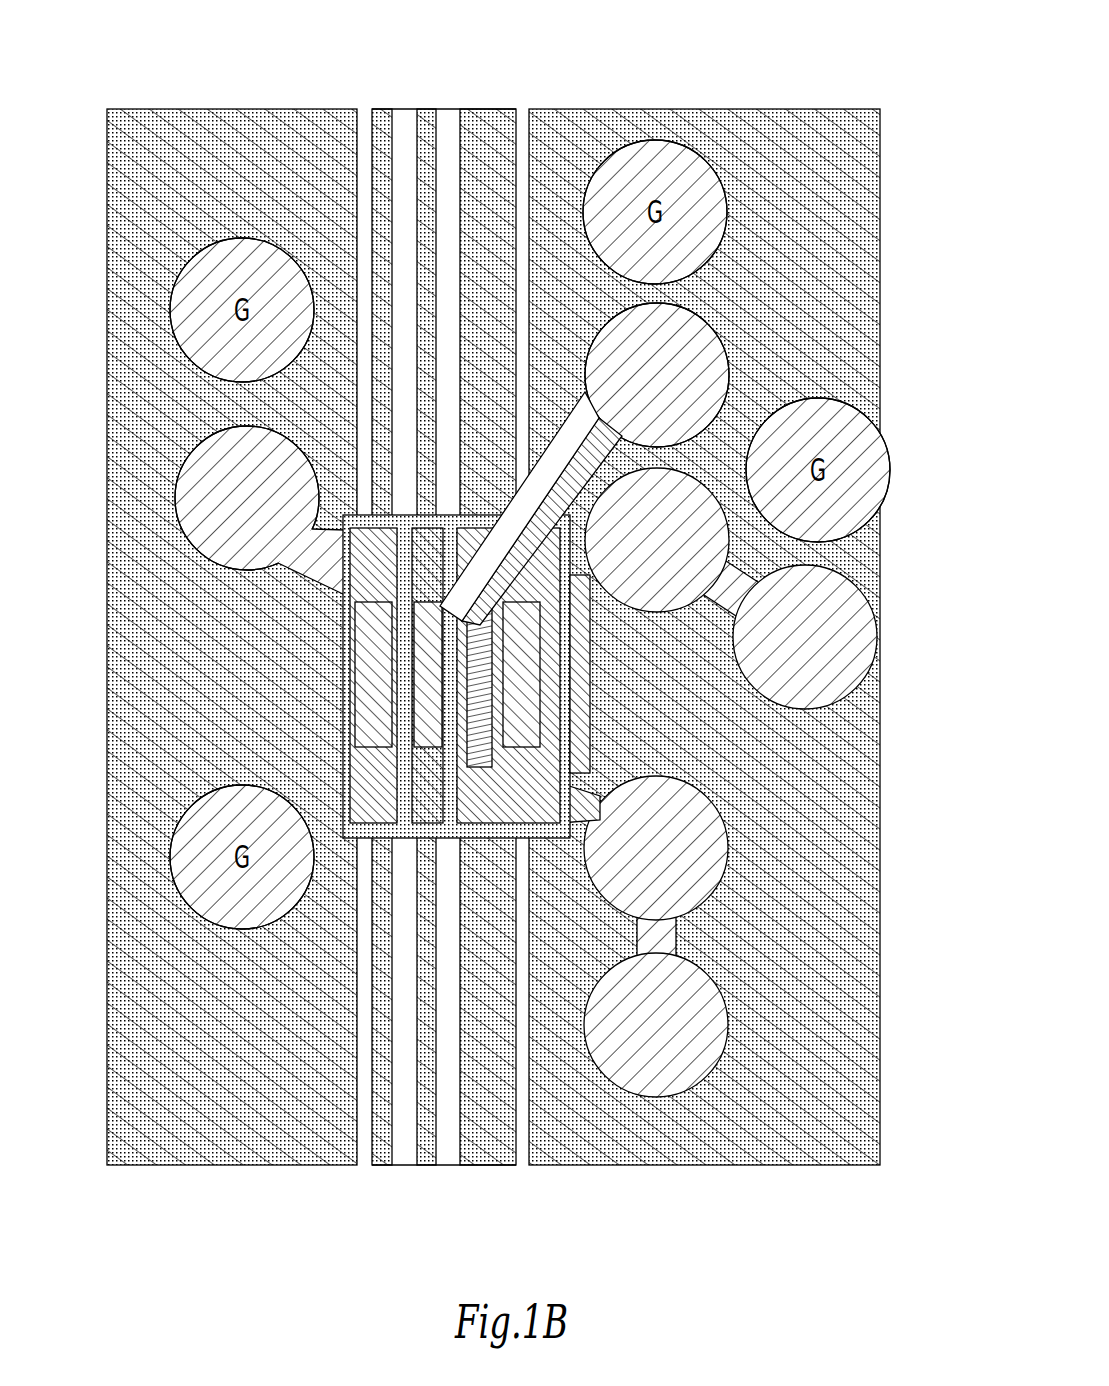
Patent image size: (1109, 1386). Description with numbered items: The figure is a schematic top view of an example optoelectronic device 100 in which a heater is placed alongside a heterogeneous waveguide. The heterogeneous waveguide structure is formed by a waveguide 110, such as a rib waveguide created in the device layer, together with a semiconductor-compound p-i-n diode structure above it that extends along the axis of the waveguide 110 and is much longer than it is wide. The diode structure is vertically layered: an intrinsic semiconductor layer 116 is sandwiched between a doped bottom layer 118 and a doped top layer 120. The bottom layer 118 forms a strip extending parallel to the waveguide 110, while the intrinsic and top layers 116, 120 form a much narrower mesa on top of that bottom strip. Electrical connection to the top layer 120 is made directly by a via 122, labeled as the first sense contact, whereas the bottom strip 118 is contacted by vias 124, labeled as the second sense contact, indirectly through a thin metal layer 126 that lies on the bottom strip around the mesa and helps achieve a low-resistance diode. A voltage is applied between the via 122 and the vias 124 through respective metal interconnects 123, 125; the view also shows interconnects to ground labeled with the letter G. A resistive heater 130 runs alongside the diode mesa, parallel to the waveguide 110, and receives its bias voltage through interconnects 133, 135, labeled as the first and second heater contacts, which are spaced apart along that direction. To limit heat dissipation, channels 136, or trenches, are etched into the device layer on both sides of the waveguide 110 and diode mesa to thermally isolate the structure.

The optoelectronic device 100 is at (528, 634).
The waveguide 110 is at (420, 108).
The intrinsic semiconductor layer 116 is at (518, 658).
The bottom layer 118 is at (400, 845).
The top layer 120 is at (518, 658).
The via 122 is at (423, 667).
The metal interconnect 123 is at (707, 372).
The vias 124 is at (496, 675).
The metal interconnect 125 is at (183, 478).
The metal layer 126 is at (375, 805).
The resistive heater 130 is at (496, 676).
The interconnect 133 is at (695, 862).
The interconnect 135 is at (860, 625).
The channels 136 is at (366, 108).